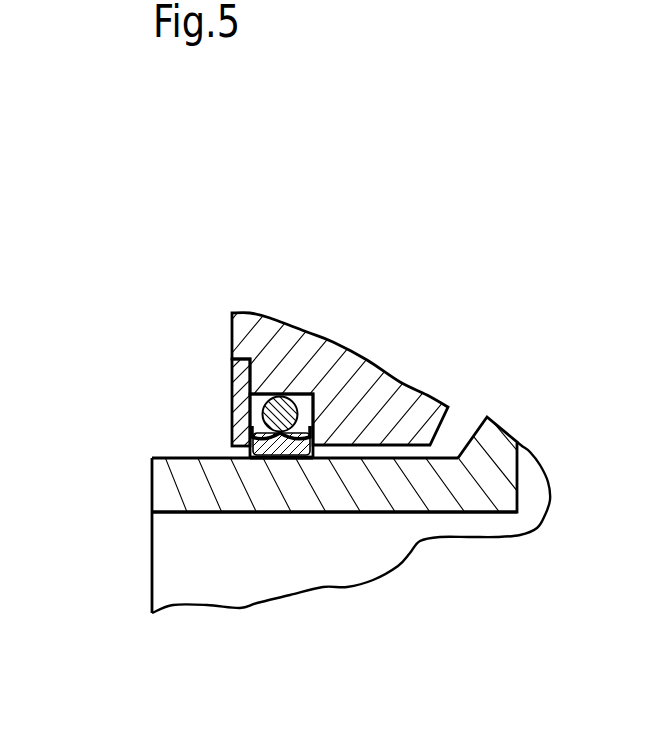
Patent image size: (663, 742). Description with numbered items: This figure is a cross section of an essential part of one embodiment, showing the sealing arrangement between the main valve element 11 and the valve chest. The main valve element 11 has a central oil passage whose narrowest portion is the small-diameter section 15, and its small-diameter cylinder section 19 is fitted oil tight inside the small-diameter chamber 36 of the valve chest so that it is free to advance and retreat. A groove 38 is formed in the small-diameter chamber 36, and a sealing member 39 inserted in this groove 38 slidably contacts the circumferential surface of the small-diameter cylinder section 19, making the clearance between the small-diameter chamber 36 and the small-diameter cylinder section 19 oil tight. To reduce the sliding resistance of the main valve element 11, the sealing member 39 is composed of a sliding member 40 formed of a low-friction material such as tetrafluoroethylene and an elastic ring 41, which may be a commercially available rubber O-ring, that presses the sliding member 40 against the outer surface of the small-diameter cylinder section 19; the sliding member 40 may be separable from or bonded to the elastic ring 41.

The main valve element 11 is at (152, 513).
The small-diameter section 15 is at (193, 513).
The small-diameter cylinder section 19 is at (203, 458).
The small-diameter chamber 36 is at (379, 463).
The groove 38 is at (302, 393).
The sealing member 39 is at (268, 460).
The sliding member 40 is at (299, 460).
The elastic ring 41 is at (276, 388).